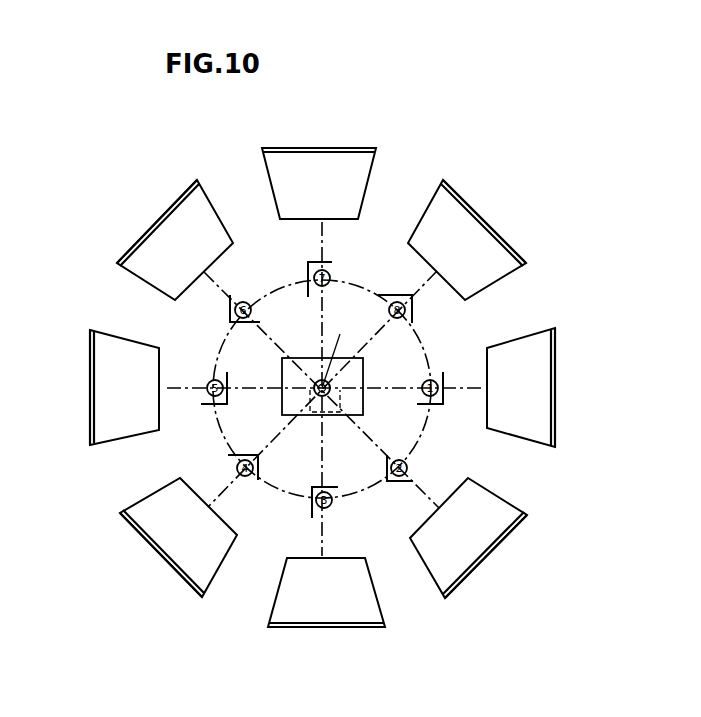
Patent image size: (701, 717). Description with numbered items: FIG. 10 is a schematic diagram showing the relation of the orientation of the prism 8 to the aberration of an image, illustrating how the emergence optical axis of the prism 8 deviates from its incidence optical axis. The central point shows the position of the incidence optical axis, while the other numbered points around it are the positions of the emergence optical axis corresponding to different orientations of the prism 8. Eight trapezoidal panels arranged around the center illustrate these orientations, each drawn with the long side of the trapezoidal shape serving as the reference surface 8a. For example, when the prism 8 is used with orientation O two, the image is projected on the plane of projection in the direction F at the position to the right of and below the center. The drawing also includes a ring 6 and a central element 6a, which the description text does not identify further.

The circular path of detectors 6 is at (358, 289).
The central unit 6a is at (363, 368).
The prism 8 is at (316, 395).
The reference surface 8a is at (325, 394).